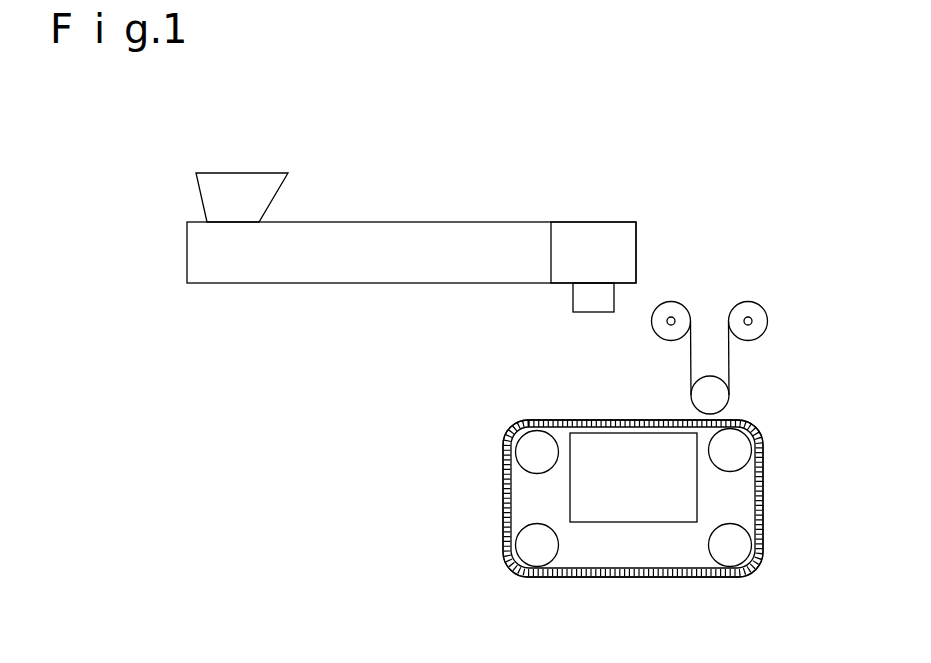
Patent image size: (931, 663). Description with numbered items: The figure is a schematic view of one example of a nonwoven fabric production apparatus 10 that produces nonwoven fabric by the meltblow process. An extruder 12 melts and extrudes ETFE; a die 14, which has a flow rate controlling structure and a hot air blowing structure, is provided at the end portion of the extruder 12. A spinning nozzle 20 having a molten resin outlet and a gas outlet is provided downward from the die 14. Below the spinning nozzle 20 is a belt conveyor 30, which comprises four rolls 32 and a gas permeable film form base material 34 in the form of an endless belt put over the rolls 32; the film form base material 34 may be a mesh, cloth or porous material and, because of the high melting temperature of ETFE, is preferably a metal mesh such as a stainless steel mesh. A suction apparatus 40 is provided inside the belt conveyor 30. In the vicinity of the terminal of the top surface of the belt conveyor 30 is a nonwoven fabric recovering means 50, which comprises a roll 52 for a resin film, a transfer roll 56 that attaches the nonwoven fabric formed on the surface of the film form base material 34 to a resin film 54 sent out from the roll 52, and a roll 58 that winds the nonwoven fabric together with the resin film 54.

The nonwoven fabric production apparatus 10 is at (604, 164).
The extruder 12 is at (391, 222).
The die 14 is at (627, 222).
The spinning nozzle 20 is at (565, 301).
The belt conveyor 30 is at (494, 491).
The roll 32 is at (528, 444).
The film form base material 34 is at (613, 420).
The suction apparatus 40 is at (625, 518).
The nonwoven fabric recovering means 50 is at (749, 291).
The roll for a resin film 52 is at (676, 302).
The resin film 54 is at (690, 354).
The transfer roll 56 is at (720, 400).
The roll 58 is at (768, 316).